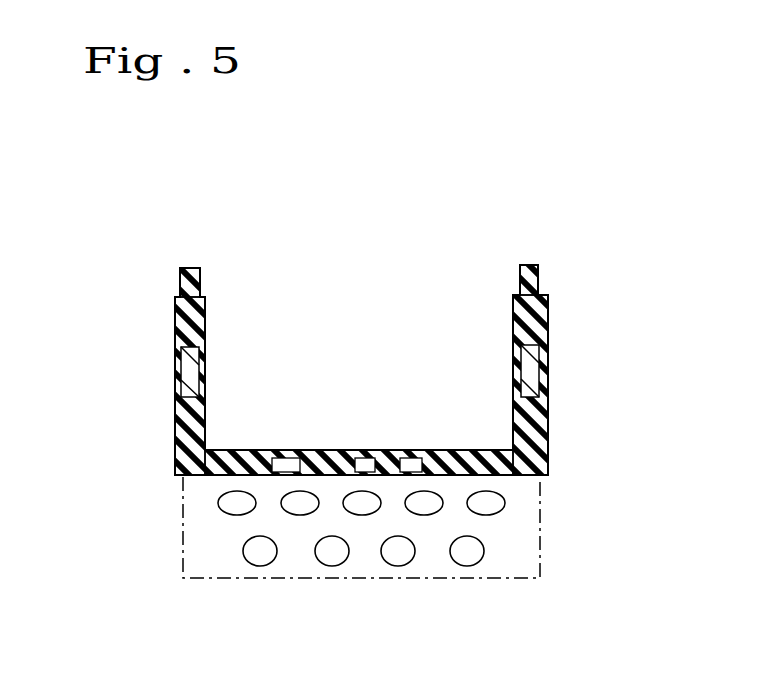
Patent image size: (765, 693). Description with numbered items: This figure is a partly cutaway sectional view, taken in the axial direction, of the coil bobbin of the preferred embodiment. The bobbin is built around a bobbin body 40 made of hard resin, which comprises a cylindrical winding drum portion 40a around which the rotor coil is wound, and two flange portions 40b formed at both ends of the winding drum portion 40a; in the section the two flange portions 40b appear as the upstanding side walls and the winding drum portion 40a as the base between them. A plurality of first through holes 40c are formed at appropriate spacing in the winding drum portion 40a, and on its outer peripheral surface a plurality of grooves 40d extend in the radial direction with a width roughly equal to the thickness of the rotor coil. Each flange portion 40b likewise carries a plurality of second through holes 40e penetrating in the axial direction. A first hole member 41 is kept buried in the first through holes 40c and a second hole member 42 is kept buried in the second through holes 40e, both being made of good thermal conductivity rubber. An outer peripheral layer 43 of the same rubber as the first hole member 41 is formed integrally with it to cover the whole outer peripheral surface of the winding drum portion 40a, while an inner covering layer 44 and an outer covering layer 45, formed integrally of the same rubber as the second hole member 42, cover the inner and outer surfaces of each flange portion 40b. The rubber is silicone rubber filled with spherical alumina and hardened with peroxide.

The bobbin body 40 is at (592, 224).
The winding drum portion 40a is at (428, 548).
The flange portion 40b is at (186, 268).
The first through hole 40c is at (452, 461).
The groove 40d is at (294, 460).
The second through hole 40e is at (177, 413).
The first hole member 41 is at (372, 456).
The second hole member 42 is at (177, 343).
The outer peripheral layer 43 is at (412, 457).
The inner covering layer 44 is at (204, 368).
The outer covering layer 45 is at (180, 375).